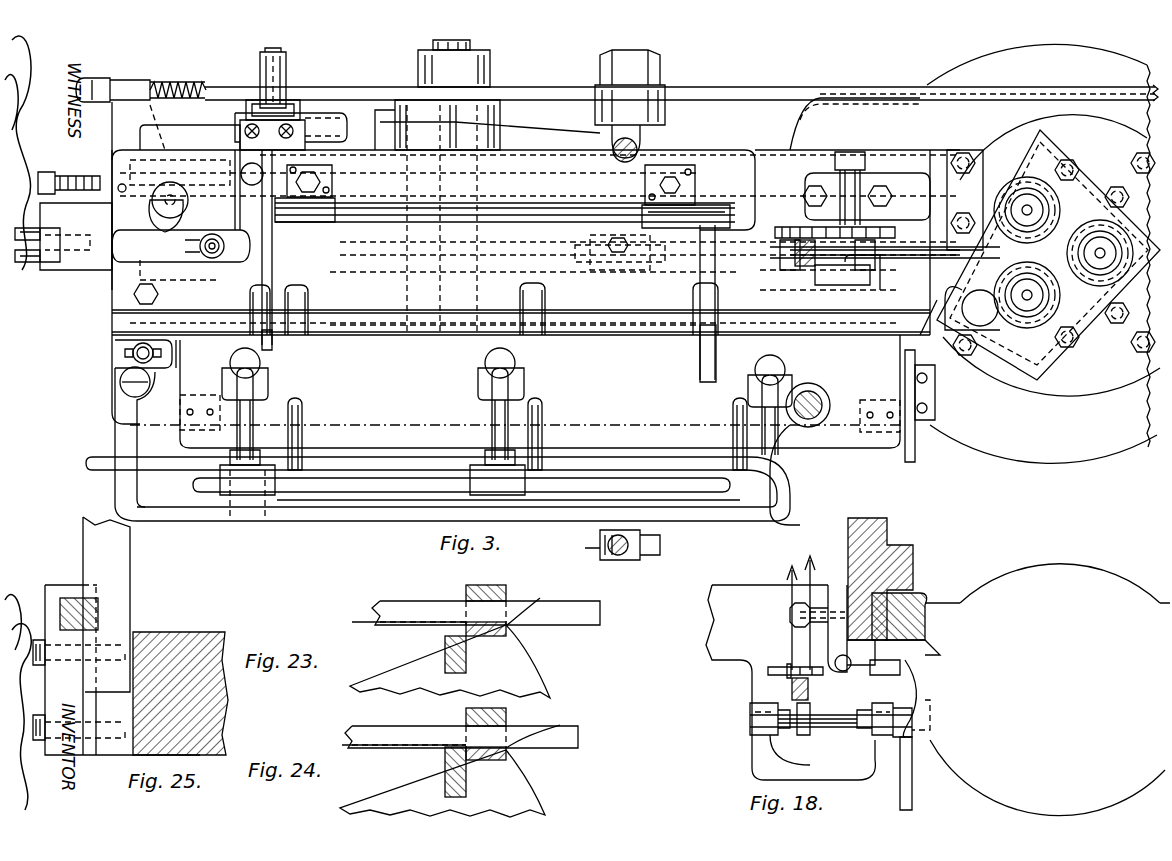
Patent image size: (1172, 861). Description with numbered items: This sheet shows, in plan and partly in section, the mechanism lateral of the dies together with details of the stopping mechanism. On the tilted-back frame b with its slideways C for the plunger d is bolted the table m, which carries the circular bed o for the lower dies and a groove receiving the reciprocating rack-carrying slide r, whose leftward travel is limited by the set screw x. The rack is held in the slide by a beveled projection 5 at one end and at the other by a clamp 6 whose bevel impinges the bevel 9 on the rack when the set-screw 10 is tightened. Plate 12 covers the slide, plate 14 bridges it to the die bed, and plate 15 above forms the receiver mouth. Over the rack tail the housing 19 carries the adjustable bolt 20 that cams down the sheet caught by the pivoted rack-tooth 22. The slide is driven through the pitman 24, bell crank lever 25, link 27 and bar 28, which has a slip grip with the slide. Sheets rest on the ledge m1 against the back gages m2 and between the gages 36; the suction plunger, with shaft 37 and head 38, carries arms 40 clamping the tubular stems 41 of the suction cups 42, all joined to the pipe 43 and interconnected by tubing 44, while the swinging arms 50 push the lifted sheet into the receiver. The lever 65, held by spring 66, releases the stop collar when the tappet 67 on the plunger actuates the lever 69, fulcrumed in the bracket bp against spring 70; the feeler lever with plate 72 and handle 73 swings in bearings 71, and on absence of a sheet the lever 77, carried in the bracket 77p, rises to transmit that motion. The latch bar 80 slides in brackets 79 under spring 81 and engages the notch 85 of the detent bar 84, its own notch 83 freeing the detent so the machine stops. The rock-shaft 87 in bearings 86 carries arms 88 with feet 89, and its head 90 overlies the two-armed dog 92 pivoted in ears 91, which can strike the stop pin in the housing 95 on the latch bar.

In FIG. 3, the beveled projection 5 is at (240, 123).
In FIG. 3, the clamp 6 is at (5, 246).
In FIG. 3, the bevel 9 is at (1100, 230).
In FIG. 3, the set-screw 10 is at (32, 260).
In FIG. 3, the plate 12 is at (893, 330).
In FIG. 3, the plate 14 is at (985, 340).
In FIG. 3, the plate 15 is at (484, 309).
In FIG. 3, the elongated housing 19 is at (230, 258).
In FIG. 3, the bolt 20 is at (181, 222).
In FIG. 3, the pawl or rack-tooth 22 is at (76, 236).
In FIG. 3, the pitman 24 is at (642, 148).
In FIG. 3, the bell crank lever 25 is at (505, 120).
In FIG. 3, the link 27 is at (378, 108).
In FIG. 3, the bar 28 is at (195, 131).
In FIG. 3, the gages 36 is at (170, 365).
In FIG. 3, the shaft 37 is at (818, 395).
In FIG. 3, the head 38 is at (395, 520).
In FIG. 3, the arms 40 is at (253, 436).
In FIG. 3, the tubular stems 41 is at (262, 396).
In FIG. 3, the suction cups 42 is at (232, 358).
In FIG. 3, the pipe 43 is at (422, 462).
In FIG. 3, the tubing 44 is at (360, 490).
In FIG. 3, the arms 50 is at (302, 440).
In FIG. 3, the lever 65 is at (795, 247).
In FIG. 18, the lever 65 is at (792, 688).
In FIG. 18, the spring 66 is at (815, 578).
In FIG. 18, the tappet 67 is at (905, 665).
In FIG. 18, the lever 69 is at (930, 648).
In FIG. 18, the spring 70 is at (790, 600).
In FIG. 3, the bearings 71 is at (790, 300).
In FIG. 18, the bearings 71 is at (880, 735).
In FIG. 3, the plate 72 is at (835, 272).
In FIG. 18, the plate 72 is at (838, 690).
In FIG. 3, the handle 73 is at (917, 452).
In FIG. 18, the handle 73 is at (912, 795).
In FIG. 3, the lever 77 is at (785, 228).
In FIG. 18, the lever 77 is at (782, 668).
In FIG. 3, the bracket 77p is at (878, 188).
In FIG. 3, the brackets 79 is at (135, 80).
In FIG. 25, the brackets 79 is at (53, 690).
In FIG. 23, the brackets 79 is at (485, 585).
In FIG. 24, the brackets 79 is at (508, 714).
In FIG. 3, the latch bar 80 is at (722, 88).
In FIG. 25, the latch bar 80 is at (72, 595).
In FIG. 23, the latch bar 80 is at (405, 603).
In FIG. 24, the latch bar 80 is at (405, 728).
In FIG. 3, the spring 81 is at (185, 84).
In FIG. 23, the notch 83 is at (525, 602).
In FIG. 24, the notch 83 is at (539, 725).
In FIG. 25, the detent bar 84 is at (132, 548).
In FIG. 23, the detent bar 84 is at (445, 657).
In FIG. 24, the detent bar 84 is at (445, 777).
In FIG. 25, the notch 85 is at (98, 610).
In FIG. 23, the notch 85 is at (470, 636).
In FIG. 24, the notch 85 is at (486, 753).
In FIG. 3, the bearings 86 is at (285, 240).
In FIG. 3, the rock-shaft 87 is at (536, 215).
In FIG. 3, the arms 88 is at (275, 272).
In FIG. 3, the feet 89 is at (274, 350).
In FIG. 3, the head 90 is at (322, 115).
In FIG. 3, the ears 91 is at (283, 112).
In FIG. 3, the two-armed dog 92 is at (265, 131).
In FIG. 3, the housing 95 is at (285, 56).
In FIG. 18, the frame b is at (913, 556).
In FIG. 18, the bracket bp is at (828, 640).
In FIG. 18, the slideways C is at (930, 626).
In FIG. 18, the plunger d is at (1025, 566).
In FIG. 3, the table m is at (985, 450).
In FIG. 25, the table m is at (180, 636).
In FIG. 23, the table m is at (530, 665).
In FIG. 24, the table m is at (528, 788).
In FIG. 3, the ledge m1 is at (521, 379).
In FIG. 3, the back gages m2 is at (843, 360).
In FIG. 3, the circular bed o is at (1088, 385).
In FIG. 3, the rack-carrying slide r is at (80, 270).
In FIG. 3, the set screw x is at (72, 173).